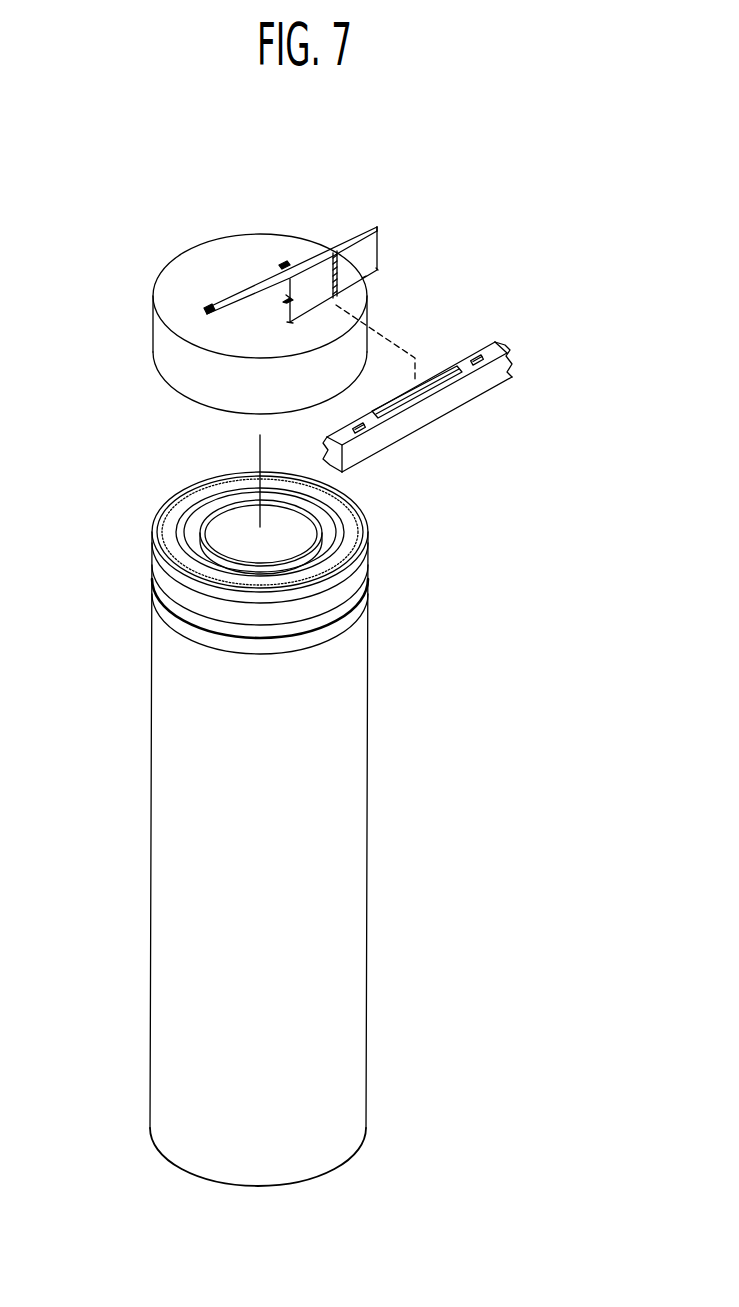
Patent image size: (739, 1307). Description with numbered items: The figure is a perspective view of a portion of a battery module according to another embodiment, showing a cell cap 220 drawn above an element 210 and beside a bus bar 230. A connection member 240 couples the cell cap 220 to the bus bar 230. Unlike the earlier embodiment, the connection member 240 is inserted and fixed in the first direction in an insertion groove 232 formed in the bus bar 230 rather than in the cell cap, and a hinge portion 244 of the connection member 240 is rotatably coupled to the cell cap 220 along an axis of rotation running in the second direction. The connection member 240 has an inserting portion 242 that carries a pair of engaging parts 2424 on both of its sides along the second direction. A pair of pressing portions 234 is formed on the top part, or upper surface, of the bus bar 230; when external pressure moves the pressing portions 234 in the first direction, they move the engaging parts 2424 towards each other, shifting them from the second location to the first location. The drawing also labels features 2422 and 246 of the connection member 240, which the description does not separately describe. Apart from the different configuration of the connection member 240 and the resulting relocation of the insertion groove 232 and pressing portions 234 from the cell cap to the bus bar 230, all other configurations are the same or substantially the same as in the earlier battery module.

The can 210 is at (151, 746).
The cell cap 220 is at (152, 332).
The bus bar 230 is at (451, 389).
The insertion groove 232 is at (396, 392).
The pressing portion 234 is at (475, 357).
The connection member 240 is at (287, 300).
The inserting portion 242 is at (373, 252).
The lower edge of tab plate 2422 is at (364, 279).
The engaging part 2424 is at (380, 268).
The hinge portion 244 is at (283, 262).
The end of tab 246 is at (378, 228).